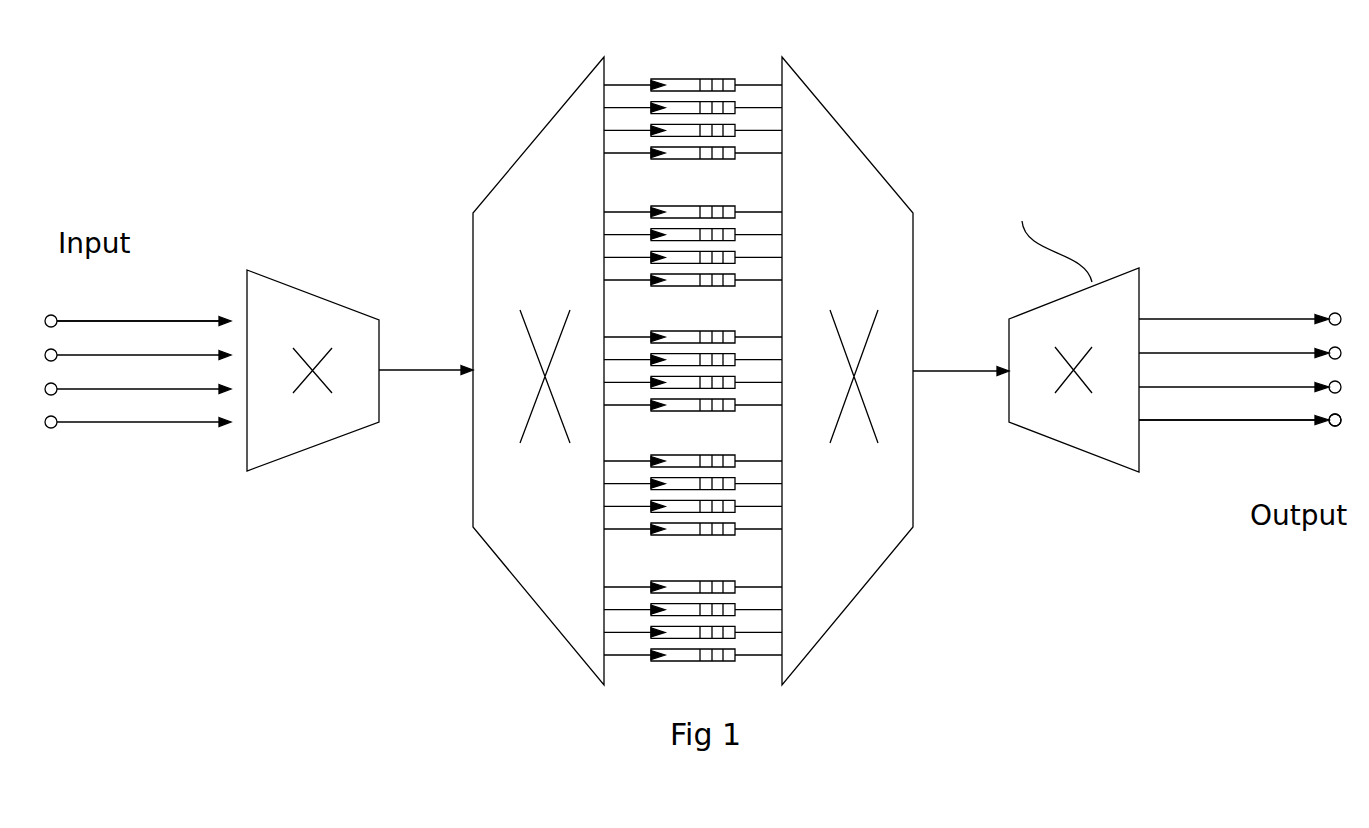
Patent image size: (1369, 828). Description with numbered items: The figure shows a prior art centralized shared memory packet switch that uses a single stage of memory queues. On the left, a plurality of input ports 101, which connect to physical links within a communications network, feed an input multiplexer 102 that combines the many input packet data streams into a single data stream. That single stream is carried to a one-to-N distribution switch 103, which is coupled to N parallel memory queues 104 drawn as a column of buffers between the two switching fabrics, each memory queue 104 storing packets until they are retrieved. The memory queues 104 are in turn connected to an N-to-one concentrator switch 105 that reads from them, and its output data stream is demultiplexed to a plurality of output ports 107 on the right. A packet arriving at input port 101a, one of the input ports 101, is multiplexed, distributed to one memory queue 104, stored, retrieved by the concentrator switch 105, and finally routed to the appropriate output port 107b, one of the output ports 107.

The input ports 101 is at (57, 427).
The input port 101a is at (138, 302).
The input multiplexer 102 is at (295, 427).
The 1:N distribution switch 103 is at (532, 168).
The memory queues 104 is at (676, 87).
The N:1 concentrator switch 105 is at (818, 145).
The output ports 107 is at (1328, 310).
The output port 107b is at (1240, 440).